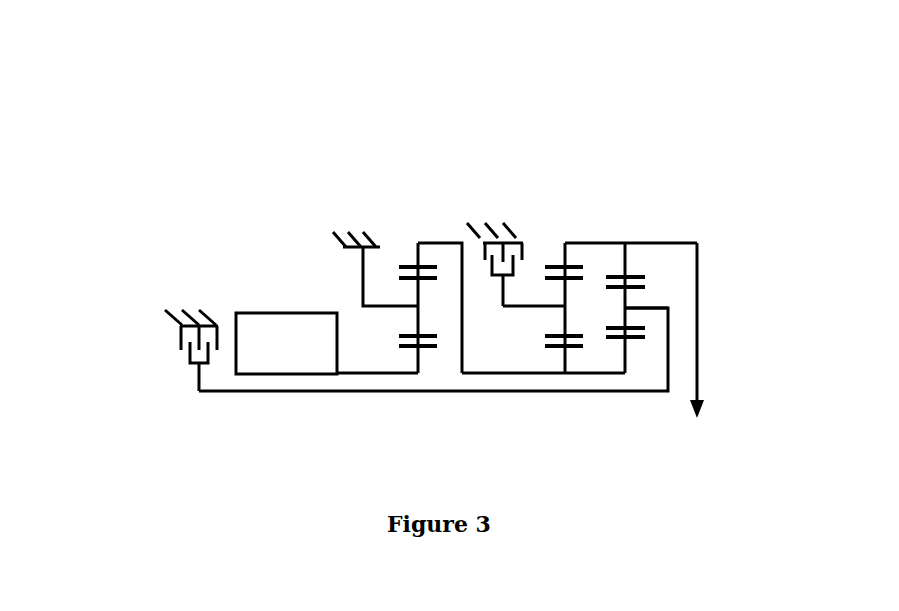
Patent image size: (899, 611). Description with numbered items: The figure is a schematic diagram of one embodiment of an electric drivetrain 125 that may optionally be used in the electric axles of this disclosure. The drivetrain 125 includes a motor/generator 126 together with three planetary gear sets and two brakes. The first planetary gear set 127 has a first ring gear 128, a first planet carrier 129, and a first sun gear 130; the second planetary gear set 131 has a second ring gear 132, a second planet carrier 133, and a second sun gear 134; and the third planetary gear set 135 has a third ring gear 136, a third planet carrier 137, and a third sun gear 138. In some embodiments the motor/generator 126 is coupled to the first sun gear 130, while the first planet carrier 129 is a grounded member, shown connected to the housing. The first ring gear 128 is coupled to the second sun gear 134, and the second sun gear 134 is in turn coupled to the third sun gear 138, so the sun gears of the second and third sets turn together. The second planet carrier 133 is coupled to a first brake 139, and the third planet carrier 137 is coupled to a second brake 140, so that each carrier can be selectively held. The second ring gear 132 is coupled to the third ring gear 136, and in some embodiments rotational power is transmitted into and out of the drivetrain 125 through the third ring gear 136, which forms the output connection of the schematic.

The electric drivetrain 125 is at (237, 48).
The motor/generator 126 is at (262, 312).
The first planetary gear set 127 is at (426, 174).
The first ring gear 128 is at (417, 251).
The first planet carrier 129 is at (363, 292).
The first sun gear 130 is at (422, 357).
The second planetary gear set 131 is at (560, 164).
The second ring gear 132 is at (565, 250).
The second planet carrier 133 is at (520, 308).
The second sun gear 134 is at (565, 362).
The third planetary gear set 135 is at (630, 164).
The third ring gear 136 is at (628, 250).
The third planet carrier 137 is at (642, 306).
The third sun gear 138 is at (625, 354).
The first brake 139 is at (522, 243).
The second brake 140 is at (178, 340).